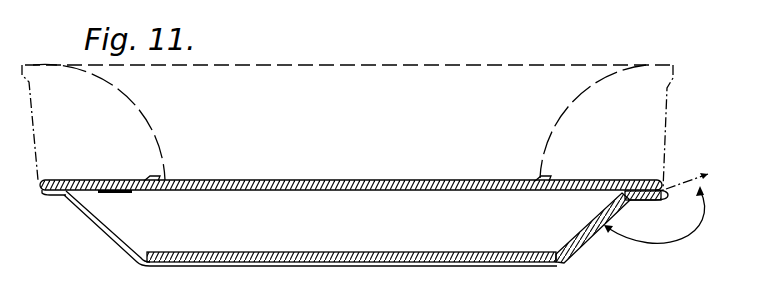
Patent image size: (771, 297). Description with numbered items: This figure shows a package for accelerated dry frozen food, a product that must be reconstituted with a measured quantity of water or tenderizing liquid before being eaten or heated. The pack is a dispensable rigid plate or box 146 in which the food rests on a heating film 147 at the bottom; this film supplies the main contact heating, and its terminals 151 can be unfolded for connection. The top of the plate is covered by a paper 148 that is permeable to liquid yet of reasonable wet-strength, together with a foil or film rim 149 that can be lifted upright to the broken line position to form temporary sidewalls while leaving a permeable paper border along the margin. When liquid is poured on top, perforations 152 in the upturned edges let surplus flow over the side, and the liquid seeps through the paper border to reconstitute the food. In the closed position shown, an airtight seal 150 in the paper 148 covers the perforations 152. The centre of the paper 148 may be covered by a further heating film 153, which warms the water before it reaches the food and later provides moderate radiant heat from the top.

The plate 146 is at (381, 262).
The heating film 147 is at (525, 252).
The paper 148 is at (158, 191).
The rim 149 is at (75, 180).
The airtight seal 150 is at (118, 192).
The terminals 151 is at (606, 218).
The perforations 152 is at (114, 181).
The heating film 153 is at (386, 180).